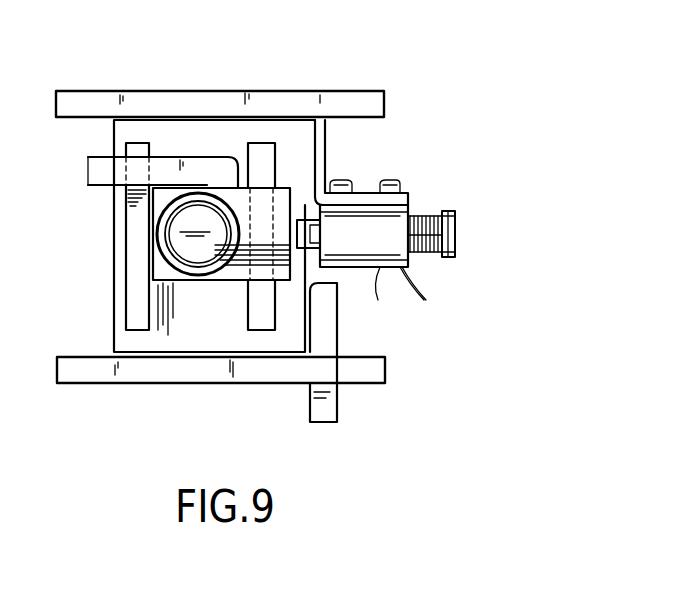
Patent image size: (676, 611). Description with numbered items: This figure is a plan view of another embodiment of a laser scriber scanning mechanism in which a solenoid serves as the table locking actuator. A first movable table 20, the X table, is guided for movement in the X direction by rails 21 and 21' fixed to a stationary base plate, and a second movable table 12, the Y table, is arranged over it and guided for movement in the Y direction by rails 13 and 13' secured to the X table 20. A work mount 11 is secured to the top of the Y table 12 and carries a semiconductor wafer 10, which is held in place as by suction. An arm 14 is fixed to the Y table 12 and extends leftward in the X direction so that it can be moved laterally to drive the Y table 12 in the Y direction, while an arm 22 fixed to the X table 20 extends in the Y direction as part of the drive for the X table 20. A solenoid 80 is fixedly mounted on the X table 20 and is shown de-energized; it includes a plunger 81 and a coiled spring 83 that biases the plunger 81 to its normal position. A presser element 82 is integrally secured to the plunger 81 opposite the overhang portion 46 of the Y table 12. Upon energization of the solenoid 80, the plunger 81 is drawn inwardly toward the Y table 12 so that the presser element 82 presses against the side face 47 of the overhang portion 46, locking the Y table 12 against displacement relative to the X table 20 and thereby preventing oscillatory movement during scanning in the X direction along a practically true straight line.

The semiconductor wafer 10 is at (165, 222).
The work mount 11 is at (163, 257).
The second movable table 12 is at (180, 280).
The rail 13 is at (285, 197).
The rail 13' is at (148, 197).
The arm 14 is at (93, 156).
The first movable table 20 is at (114, 240).
The rail 21 is at (220, 80).
The rail 21' is at (221, 390).
The arm 22 is at (338, 412).
The overhang portion 46 is at (283, 188).
The side face 47 is at (290, 193).
The solenoid 80 is at (382, 268).
The plunger 81 is at (450, 236).
The presser element 82 is at (310, 250).
The coiled spring 83 is at (420, 218).